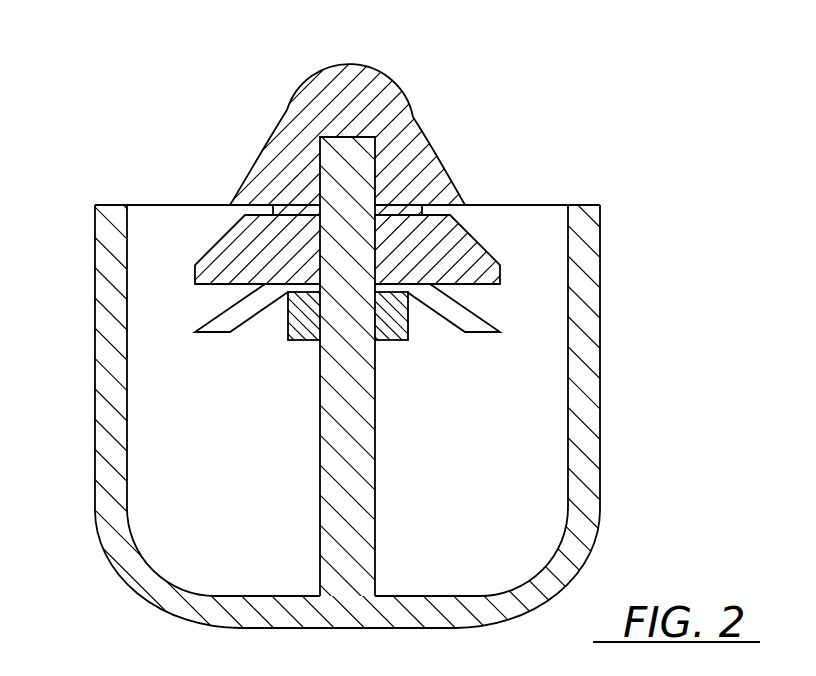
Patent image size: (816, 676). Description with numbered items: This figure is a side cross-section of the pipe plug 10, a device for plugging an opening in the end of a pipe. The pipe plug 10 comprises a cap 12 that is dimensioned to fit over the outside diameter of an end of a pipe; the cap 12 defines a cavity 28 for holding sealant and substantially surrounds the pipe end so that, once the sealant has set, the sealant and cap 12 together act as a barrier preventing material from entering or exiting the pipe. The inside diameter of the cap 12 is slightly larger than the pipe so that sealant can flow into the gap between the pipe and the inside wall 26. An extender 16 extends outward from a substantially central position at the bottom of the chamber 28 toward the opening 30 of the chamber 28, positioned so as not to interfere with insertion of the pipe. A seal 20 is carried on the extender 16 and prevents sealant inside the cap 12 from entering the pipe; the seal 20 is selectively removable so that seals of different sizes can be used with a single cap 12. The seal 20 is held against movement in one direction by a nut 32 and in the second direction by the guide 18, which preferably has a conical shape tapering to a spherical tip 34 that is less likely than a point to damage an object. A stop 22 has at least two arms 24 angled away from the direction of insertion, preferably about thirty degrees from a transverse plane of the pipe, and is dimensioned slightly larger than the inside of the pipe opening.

The pipe plug 10 is at (521, 146).
The cap 12 is at (408, 353).
The extender 16 is at (320, 540).
The guide 18 is at (385, 114).
The seal 20 is at (485, 253).
The stop 22 is at (490, 319).
The arms 24 is at (242, 328).
The inside wall 26 is at (127, 240).
The cavity 28 is at (470, 494).
The opening 30 is at (205, 205).
The nut 32 is at (288, 340).
The spherical tip 34 is at (353, 65).